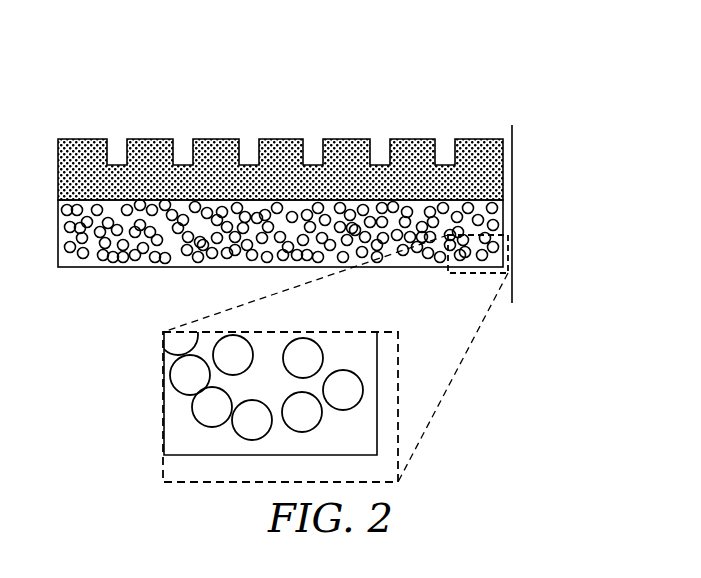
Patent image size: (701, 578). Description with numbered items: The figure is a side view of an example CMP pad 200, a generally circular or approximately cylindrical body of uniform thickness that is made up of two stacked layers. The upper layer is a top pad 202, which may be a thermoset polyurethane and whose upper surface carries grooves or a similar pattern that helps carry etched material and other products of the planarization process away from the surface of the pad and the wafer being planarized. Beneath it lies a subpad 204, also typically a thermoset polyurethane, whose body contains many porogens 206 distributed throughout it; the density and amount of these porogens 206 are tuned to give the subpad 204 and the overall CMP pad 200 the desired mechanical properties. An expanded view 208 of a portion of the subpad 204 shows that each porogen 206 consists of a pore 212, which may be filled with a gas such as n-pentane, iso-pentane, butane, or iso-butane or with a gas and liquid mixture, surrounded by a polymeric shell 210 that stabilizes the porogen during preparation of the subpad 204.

The CMP pad 200 is at (228, 92).
The top pad 202 is at (492, 172).
The subpad 204 is at (498, 208).
The porogens 206 is at (500, 260).
The expanded view 208 is at (497, 243).
The polymeric shell 210 is at (362, 377).
The pore 212 is at (343, 393).